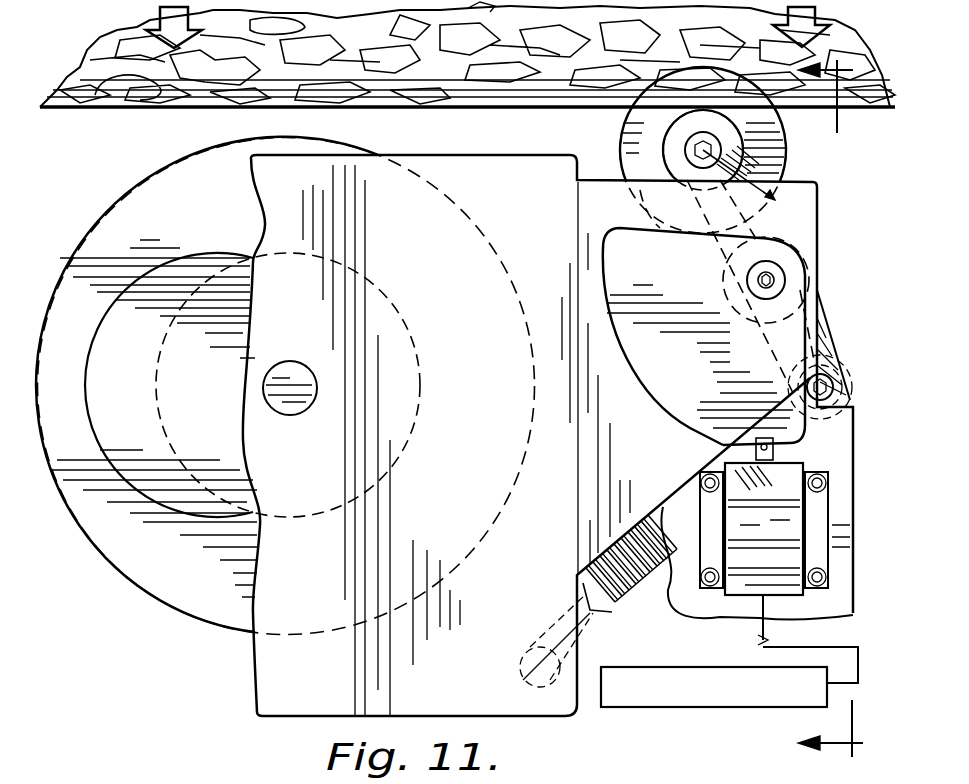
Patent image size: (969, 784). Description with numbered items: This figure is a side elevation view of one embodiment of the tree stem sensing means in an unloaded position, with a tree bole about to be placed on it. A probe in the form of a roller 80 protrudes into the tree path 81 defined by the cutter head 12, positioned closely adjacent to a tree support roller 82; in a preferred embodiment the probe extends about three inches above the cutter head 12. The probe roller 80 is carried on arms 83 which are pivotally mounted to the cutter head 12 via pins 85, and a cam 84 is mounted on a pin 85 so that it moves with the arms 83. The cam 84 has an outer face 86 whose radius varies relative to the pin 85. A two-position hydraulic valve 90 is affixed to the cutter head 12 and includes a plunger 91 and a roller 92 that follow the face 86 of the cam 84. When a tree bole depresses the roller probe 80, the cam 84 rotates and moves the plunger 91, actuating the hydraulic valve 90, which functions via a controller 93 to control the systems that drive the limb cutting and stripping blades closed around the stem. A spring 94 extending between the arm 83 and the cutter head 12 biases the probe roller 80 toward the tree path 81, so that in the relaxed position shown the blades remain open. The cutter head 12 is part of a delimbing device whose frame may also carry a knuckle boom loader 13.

The cutter head 12 is at (826, 227).
The knuckle boom loader 13 is at (838, 411).
The roller 80 is at (624, 138).
The tree path 81 is at (293, 122).
The tree support roller 82 is at (142, 587).
The arms 83 is at (790, 205).
The cam 84 is at (747, 355).
The pins 85 is at (775, 278).
The outer face 86 is at (655, 405).
The two-position hydraulic valve 90 is at (750, 580).
The plunger 91 is at (782, 460).
The roller 92 is at (775, 442).
The controller 93 is at (673, 707).
The spring 94 is at (607, 613).